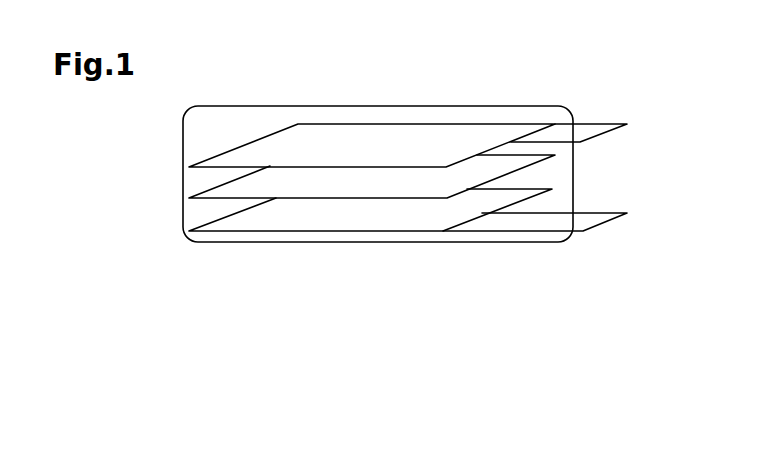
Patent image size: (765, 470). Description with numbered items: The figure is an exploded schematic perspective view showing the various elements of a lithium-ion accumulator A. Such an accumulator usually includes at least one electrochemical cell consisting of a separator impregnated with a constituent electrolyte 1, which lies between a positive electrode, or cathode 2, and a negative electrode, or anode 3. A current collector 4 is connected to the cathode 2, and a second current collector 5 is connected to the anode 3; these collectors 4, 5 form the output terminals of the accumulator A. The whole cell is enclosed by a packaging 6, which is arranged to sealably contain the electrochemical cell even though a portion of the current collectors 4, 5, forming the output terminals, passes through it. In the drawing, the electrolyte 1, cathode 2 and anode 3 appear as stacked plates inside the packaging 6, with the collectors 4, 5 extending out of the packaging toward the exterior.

The metal-ion accumulator A is at (497, 86).
The electrolyte 1 is at (527, 168).
The cathode 2 is at (387, 143).
The anode 3 is at (313, 212).
The current collector 4 is at (584, 132).
The current collector 5 is at (593, 217).
The packaging 6 is at (393, 243).